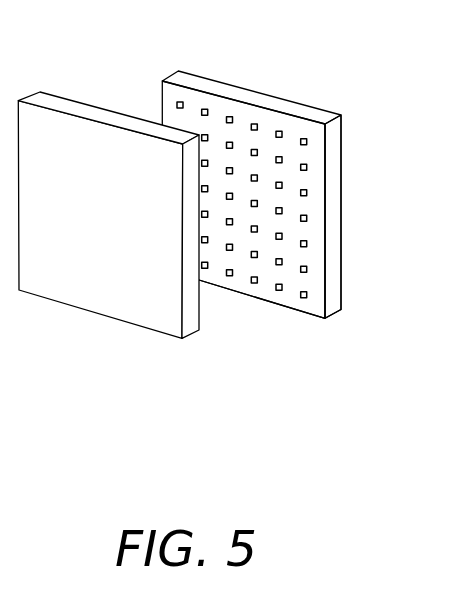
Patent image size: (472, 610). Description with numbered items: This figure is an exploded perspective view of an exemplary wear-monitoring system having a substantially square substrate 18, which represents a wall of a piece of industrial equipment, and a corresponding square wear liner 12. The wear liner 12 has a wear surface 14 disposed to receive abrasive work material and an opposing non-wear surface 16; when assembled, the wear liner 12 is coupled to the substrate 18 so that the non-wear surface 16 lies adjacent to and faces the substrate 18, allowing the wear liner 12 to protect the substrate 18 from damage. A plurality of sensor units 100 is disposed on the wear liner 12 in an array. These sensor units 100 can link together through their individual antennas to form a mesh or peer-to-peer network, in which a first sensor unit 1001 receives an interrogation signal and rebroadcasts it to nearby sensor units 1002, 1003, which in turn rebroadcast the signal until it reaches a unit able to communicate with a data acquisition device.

The wear liner 12 is at (245, 328).
The wear surface 14 is at (342, 175).
The non-wear surface 16 is at (295, 128).
The substrate 18 is at (97, 344).
The sensor units 100 is at (234, 92).
The first sensor unit 1001 is at (308, 292).
The second sensor unit 1002 is at (308, 266).
The third sensor unit 1003 is at (281, 291).